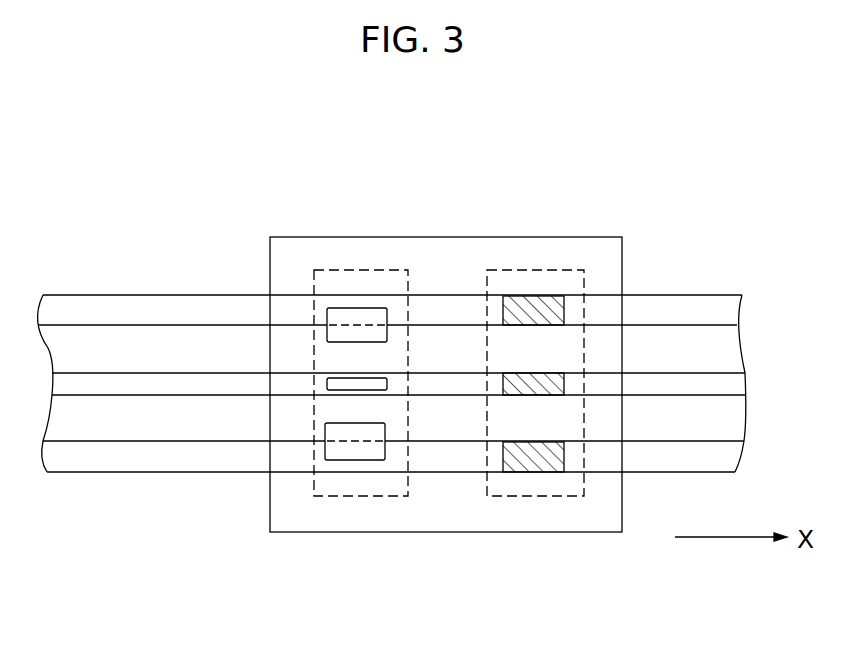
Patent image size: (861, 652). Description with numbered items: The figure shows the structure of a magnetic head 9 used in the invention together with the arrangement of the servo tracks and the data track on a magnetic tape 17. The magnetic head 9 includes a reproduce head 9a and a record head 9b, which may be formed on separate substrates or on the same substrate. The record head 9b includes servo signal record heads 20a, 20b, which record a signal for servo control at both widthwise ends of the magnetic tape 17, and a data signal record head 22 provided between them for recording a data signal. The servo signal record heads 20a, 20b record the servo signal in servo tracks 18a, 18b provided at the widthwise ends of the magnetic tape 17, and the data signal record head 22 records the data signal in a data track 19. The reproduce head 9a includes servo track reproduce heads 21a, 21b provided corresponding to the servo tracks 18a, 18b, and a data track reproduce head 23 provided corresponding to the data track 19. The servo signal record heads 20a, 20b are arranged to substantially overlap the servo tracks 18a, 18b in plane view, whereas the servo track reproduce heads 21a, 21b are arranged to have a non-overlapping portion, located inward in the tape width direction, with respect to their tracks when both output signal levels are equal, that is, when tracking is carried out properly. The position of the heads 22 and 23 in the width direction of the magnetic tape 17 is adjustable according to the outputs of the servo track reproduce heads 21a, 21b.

The magnetic head 9 is at (448, 535).
The reproduce head 9a is at (365, 497).
The record head 9b is at (561, 497).
The magnetic tape 17 is at (47, 350).
The servo track 18a is at (130, 312).
The servo track 18b is at (106, 458).
The data track 19 is at (710, 382).
The servo signal record head 20a is at (543, 297).
The servo signal record head 20b is at (535, 474).
The servo track reproduce head 21a is at (344, 308).
The servo track reproduce head 21b is at (360, 460).
The data signal record head 22 is at (540, 392).
The data track reproduce head 23 is at (332, 392).